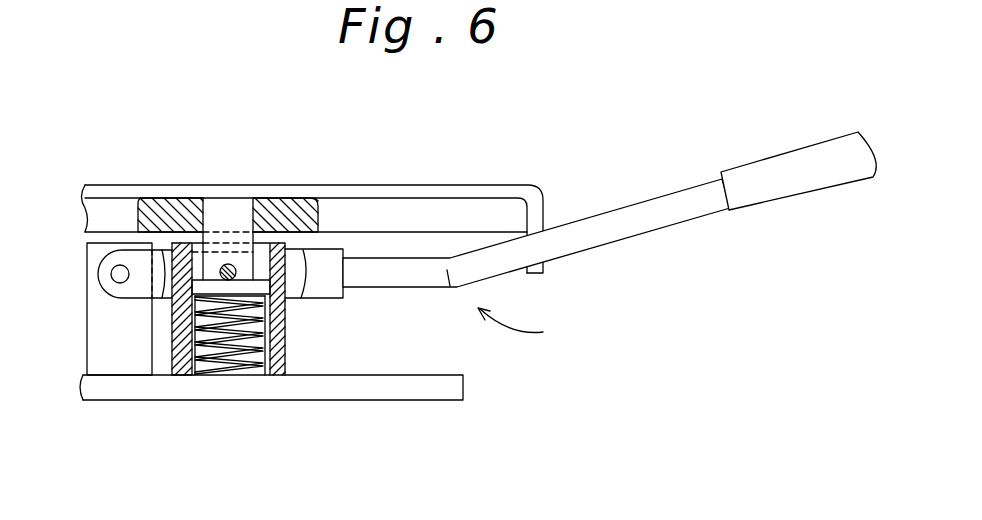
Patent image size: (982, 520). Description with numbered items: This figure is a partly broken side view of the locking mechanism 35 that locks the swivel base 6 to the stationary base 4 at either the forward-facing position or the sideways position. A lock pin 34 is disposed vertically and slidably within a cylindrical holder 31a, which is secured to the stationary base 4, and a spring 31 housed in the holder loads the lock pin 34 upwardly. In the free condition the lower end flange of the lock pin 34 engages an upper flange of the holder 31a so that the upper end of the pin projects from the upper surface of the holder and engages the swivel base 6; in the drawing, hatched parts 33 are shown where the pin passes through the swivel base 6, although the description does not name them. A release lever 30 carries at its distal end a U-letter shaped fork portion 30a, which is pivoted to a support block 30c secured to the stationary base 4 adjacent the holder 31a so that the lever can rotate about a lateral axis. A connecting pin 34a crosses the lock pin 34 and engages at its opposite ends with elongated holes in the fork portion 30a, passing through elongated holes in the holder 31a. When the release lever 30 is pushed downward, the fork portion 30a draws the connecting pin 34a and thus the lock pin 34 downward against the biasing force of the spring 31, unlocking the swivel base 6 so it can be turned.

The stationary base 4 is at (390, 387).
The swivel base 6 is at (412, 212).
The release lever 30 is at (652, 210).
The U-letter shaped fork portion 30a is at (326, 258).
The support block 30c is at (100, 302).
The spring 31 is at (233, 363).
The cylindrical holder 31a is at (173, 337).
The washer 33 is at (216, 212).
The lock pin 34 is at (237, 208).
The connecting pin 34a is at (237, 272).
The locking mechanism 35 is at (529, 328).